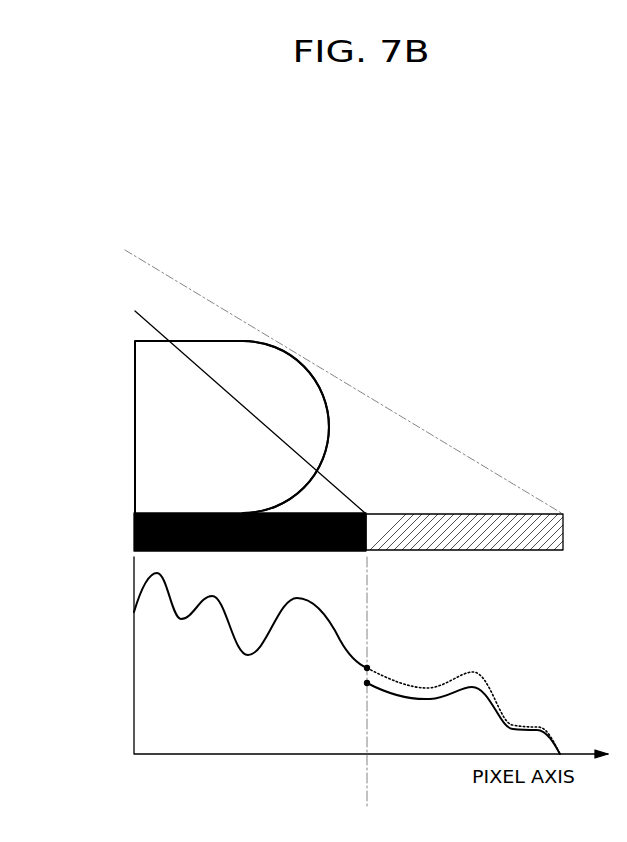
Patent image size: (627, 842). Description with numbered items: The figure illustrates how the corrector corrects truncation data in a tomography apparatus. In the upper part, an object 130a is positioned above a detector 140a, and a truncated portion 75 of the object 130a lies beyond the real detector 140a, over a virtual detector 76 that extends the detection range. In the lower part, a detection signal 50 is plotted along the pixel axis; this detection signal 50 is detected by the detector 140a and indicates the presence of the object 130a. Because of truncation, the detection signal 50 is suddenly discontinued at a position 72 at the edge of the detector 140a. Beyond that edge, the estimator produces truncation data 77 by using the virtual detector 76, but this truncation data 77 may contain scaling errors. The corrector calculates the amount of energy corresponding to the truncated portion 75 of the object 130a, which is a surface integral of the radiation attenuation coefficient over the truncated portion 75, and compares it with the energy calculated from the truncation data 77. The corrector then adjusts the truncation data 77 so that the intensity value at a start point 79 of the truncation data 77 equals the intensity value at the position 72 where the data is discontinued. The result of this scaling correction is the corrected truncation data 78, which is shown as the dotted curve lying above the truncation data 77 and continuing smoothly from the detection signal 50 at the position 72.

The object 130a is at (135, 405).
The detector 140a is at (135, 515).
The truncated portion 75 is at (287, 388).
The virtual detector 76 is at (559, 513).
The detection signal 50 is at (305, 598).
The position where data is suddenly discontinued 72 is at (367, 666).
The truncation data 77 is at (405, 700).
The corrected truncation data 78 is at (458, 678).
The start point of the truncation data 79 is at (365, 684).